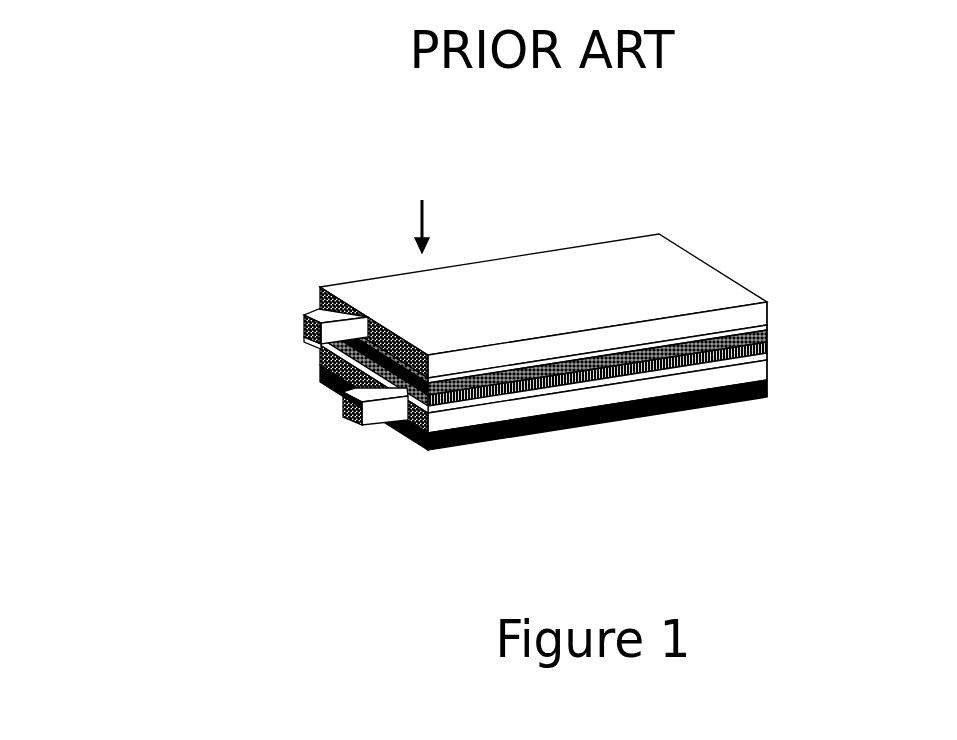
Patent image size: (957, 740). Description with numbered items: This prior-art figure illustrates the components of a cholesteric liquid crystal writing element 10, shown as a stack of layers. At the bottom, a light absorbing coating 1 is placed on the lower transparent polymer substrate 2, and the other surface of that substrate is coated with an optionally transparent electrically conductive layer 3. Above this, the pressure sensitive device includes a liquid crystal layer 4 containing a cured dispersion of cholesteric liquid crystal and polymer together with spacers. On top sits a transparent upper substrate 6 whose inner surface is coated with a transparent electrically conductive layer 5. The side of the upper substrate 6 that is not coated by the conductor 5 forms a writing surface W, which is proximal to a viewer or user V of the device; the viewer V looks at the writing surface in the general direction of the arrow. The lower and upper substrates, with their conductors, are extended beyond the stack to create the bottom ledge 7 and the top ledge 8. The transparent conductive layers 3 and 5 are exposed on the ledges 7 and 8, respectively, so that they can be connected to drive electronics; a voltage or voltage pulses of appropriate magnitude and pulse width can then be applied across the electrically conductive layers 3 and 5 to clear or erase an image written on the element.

The light absorbing coating 1 is at (737, 403).
The lower transparent polymer substrate 2 is at (767, 375).
The transparent electrically conductive layer 3 is at (765, 358).
The liquid crystal layer 4 is at (765, 346).
The transparent electrically conductive layer 5 is at (765, 332).
The transparent upper substrate 6 is at (767, 317).
The bottom ledge 7 is at (372, 402).
The top ledge 8 is at (304, 339).
The cholesteric liquid crystal writing element 10 is at (520, 332).
The viewer V is at (422, 207).
The writing surface W is at (700, 295).